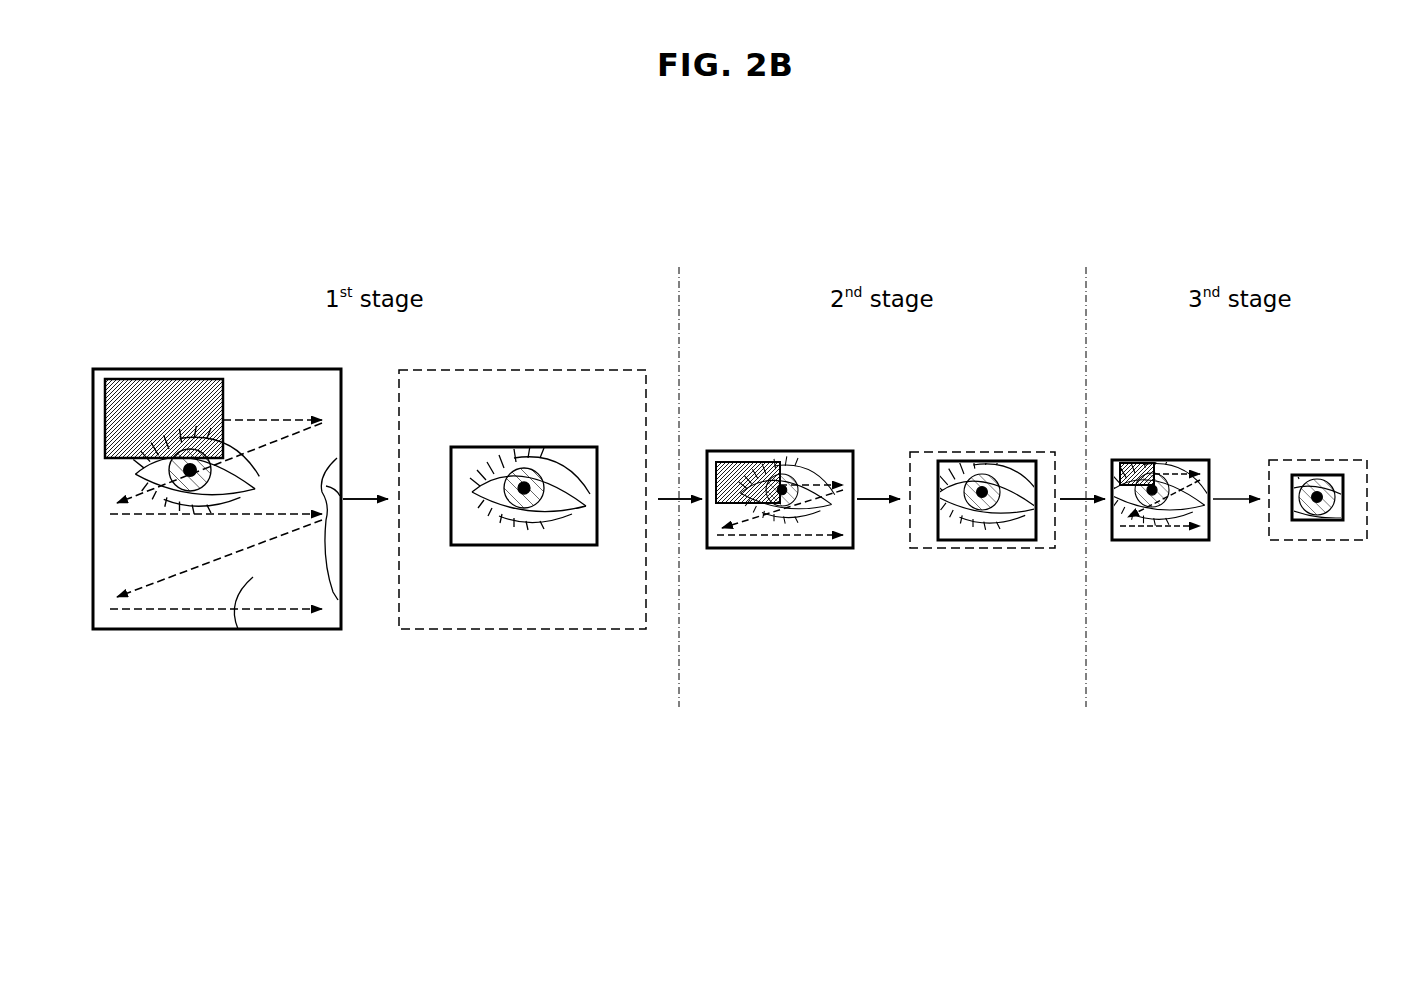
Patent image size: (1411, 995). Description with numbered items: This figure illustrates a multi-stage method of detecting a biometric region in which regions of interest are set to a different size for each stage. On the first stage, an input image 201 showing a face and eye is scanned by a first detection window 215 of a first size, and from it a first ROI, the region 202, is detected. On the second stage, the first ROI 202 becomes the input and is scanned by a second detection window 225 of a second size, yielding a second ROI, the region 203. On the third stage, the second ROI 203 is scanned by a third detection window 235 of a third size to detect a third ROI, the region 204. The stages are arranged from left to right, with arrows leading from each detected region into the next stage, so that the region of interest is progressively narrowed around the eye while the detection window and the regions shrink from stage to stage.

The input image 201 is at (303, 367).
The first detection window 215 is at (163, 380).
The first ROI 202 is at (525, 445).
The second detection window 225 is at (750, 462).
The second ROI 203 is at (990, 460).
The third detection window 235 is at (1138, 463).
The third ROI 204 is at (1318, 475).